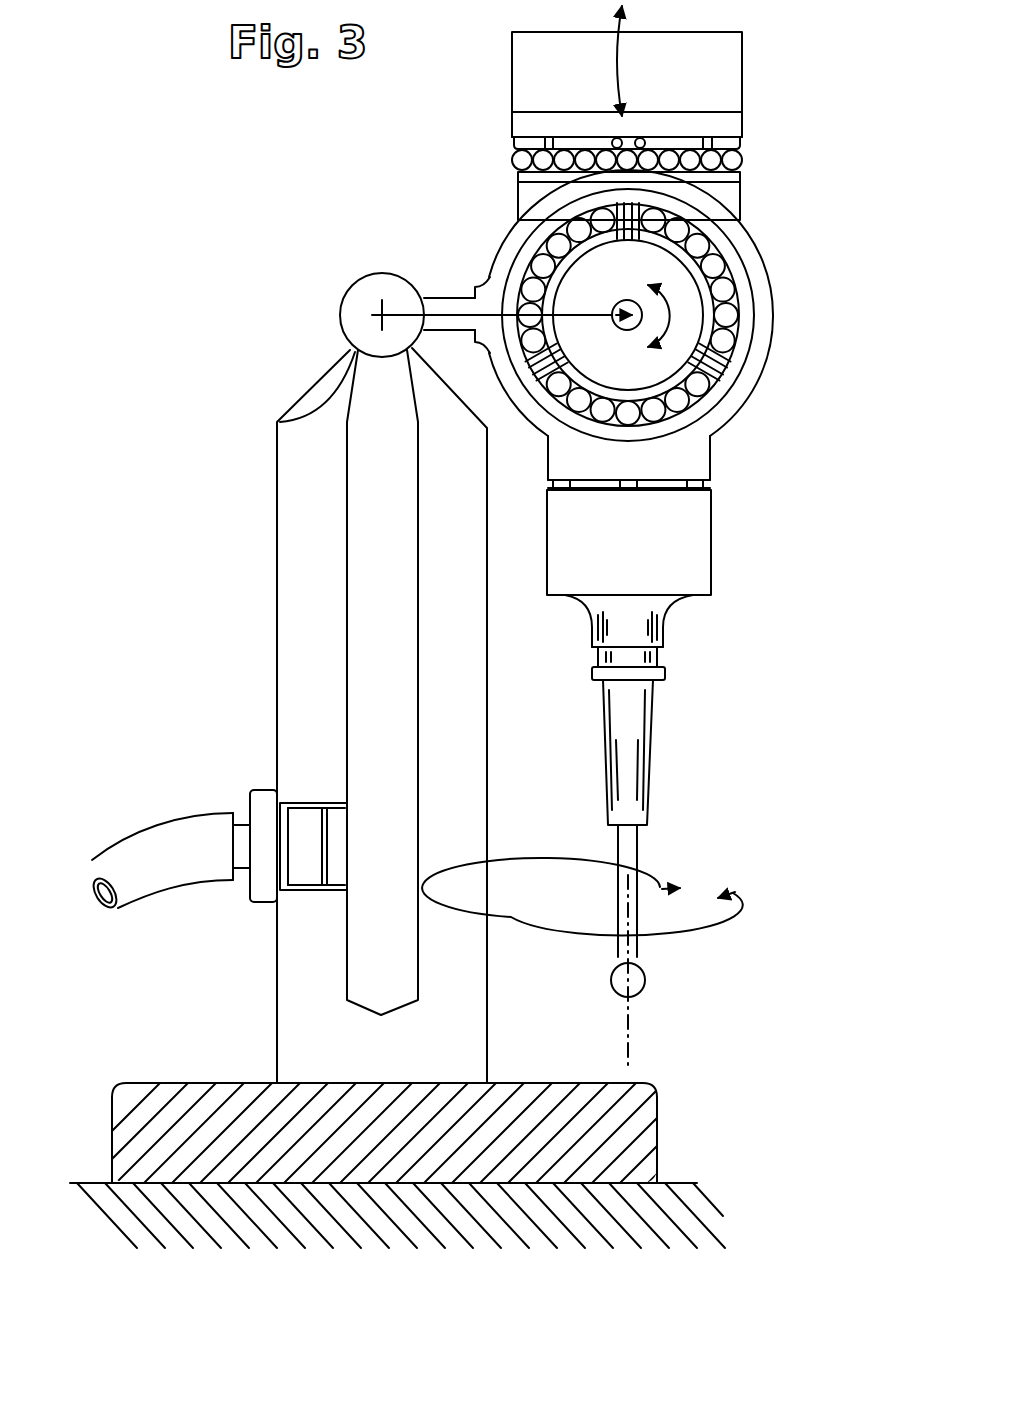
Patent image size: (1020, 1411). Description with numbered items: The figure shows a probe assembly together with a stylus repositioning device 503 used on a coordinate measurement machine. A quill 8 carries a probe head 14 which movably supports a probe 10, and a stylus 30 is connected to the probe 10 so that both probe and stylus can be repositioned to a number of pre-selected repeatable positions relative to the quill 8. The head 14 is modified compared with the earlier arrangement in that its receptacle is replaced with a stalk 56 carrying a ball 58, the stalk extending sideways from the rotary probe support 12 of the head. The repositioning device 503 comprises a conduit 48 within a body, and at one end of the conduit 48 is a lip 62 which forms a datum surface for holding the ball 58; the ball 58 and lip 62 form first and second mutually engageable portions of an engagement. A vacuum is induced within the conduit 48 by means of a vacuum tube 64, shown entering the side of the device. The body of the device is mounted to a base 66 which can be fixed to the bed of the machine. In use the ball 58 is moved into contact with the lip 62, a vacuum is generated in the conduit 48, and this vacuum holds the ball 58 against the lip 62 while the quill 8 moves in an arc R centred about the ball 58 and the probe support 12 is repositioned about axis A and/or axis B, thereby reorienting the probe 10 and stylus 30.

The quill 8 is at (540, 72).
The probe head 14 is at (423, 183).
The stalk 56 is at (441, 303).
The ball 58 is at (345, 316).
The lip 62 is at (277, 421).
The conduit 48 is at (395, 575).
The stylus repositioning device 503 is at (300, 683).
The vacuum tube 64 is at (175, 842).
The probe support 12 is at (690, 455).
The probe 10 is at (690, 560).
The stylus 30 is at (632, 755).
The base 66 is at (603, 1105).